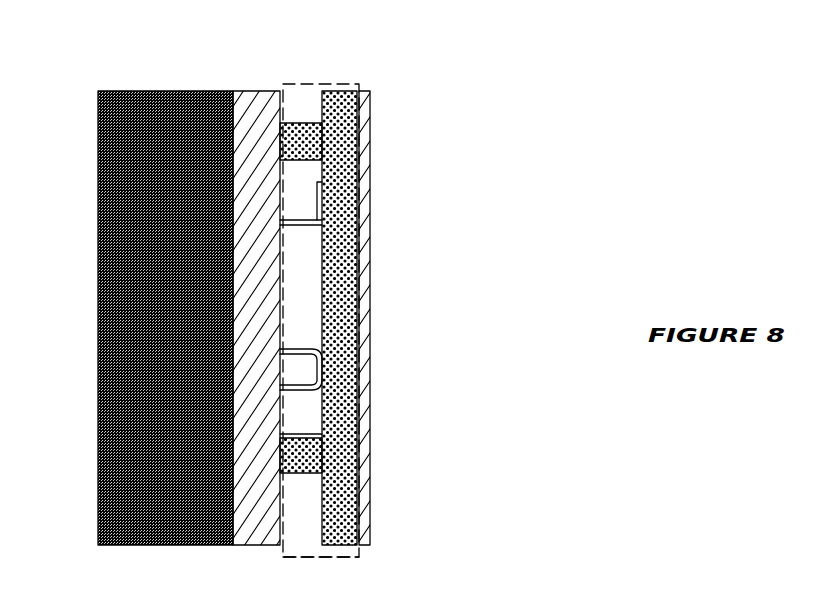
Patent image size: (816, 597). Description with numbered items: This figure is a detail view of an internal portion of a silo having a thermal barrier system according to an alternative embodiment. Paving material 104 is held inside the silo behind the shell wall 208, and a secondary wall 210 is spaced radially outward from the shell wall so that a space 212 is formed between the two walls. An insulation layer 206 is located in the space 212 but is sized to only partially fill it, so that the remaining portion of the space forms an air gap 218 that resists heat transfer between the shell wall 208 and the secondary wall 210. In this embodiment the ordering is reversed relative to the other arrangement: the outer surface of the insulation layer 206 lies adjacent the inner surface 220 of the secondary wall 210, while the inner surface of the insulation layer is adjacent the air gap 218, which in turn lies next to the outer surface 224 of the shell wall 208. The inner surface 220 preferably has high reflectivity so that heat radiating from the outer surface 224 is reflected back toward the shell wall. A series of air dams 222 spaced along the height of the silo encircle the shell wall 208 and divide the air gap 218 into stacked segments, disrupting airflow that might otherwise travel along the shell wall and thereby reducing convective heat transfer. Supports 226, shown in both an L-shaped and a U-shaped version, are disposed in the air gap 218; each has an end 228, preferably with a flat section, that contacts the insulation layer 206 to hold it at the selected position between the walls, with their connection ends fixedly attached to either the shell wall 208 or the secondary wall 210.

The paving material 104 is at (135, 343).
The shell wall 208 is at (262, 110).
The air gap 218 is at (320, 79).
The insulation layer 206 is at (347, 112).
The secondary wall 210 is at (363, 90).
The space 212 is at (358, 556).
The air dams 222 is at (311, 145).
The end 228 is at (324, 190).
The supports 226 is at (312, 225).
The inner surface 220 is at (351, 349).
The outer surface 224 is at (294, 485).